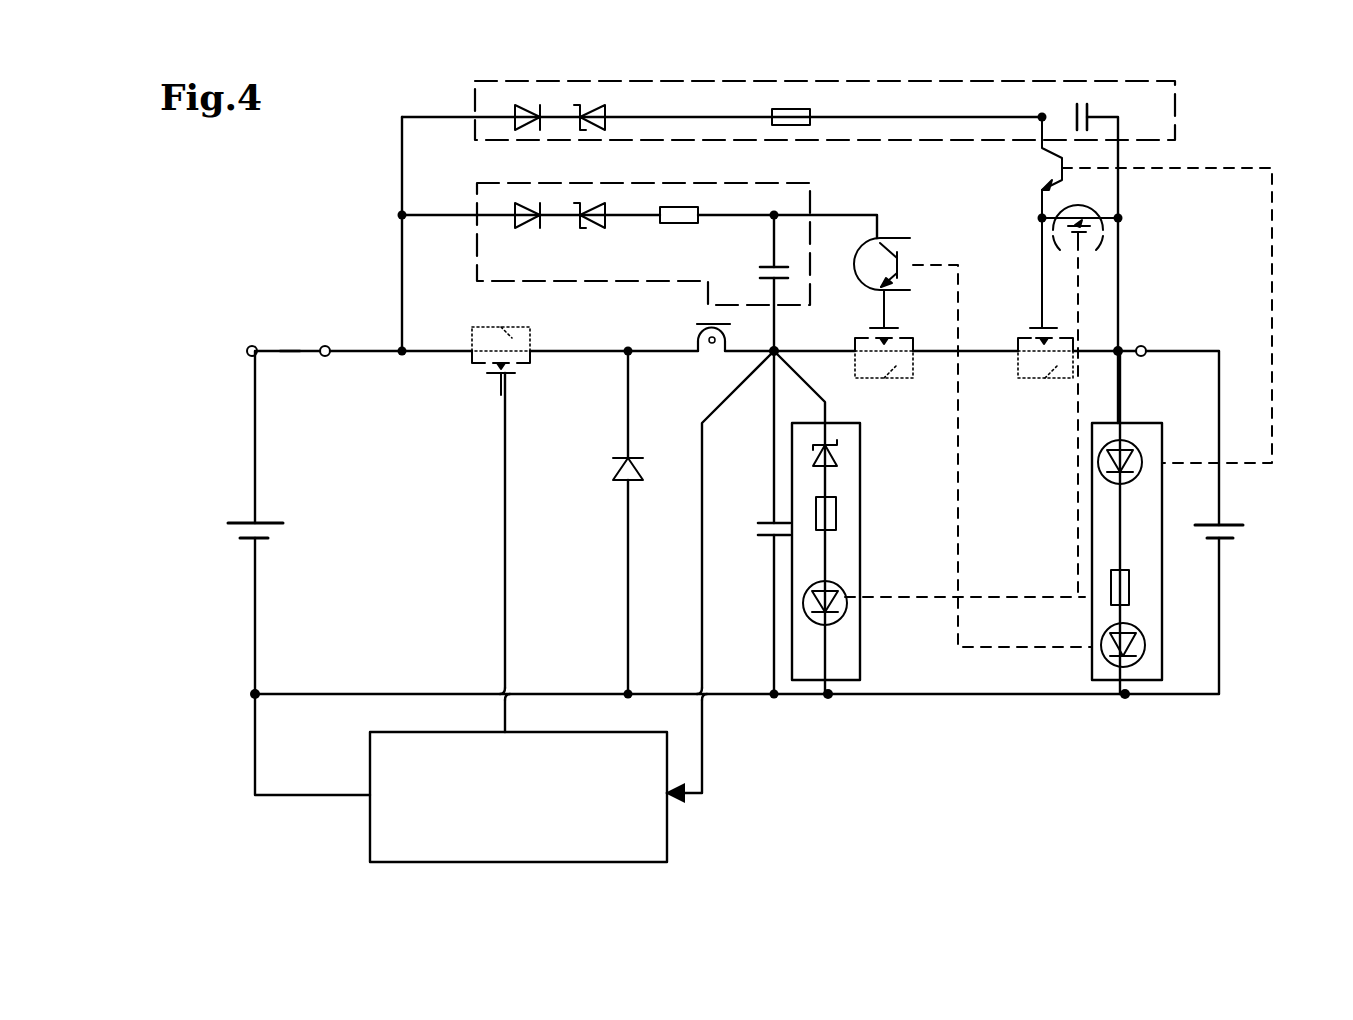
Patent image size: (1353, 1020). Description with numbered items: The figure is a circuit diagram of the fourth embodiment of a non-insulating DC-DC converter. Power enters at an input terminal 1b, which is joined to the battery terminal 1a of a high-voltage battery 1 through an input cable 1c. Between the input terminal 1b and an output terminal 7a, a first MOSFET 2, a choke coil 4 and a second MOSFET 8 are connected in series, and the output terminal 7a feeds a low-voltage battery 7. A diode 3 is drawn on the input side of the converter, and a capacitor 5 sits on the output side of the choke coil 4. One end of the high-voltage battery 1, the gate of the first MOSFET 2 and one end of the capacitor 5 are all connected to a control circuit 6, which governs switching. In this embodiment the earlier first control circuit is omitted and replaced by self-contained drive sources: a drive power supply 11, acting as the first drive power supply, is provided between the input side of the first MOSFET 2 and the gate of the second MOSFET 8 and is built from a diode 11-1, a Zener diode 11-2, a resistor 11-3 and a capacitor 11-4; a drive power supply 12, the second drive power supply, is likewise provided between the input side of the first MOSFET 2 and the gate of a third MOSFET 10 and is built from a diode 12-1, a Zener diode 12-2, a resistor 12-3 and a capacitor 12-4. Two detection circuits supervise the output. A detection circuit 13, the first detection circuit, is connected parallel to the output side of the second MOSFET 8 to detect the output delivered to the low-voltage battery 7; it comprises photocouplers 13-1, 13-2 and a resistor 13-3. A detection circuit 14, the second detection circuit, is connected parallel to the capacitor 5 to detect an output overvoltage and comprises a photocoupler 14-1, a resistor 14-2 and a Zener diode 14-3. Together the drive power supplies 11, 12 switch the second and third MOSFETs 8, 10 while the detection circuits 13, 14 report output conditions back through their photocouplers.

The high-voltage battery 1 is at (234, 518).
The battery terminal 1a is at (248, 346).
The input terminal 1b is at (330, 355).
The input cable 1c is at (288, 348).
The first MOSFET 2 is at (532, 365).
The diode 3 is at (612, 468).
The choke coil 4 is at (712, 356).
The capacitor 5 is at (758, 530).
The control circuit 6 is at (667, 830).
The low-voltage battery 7 is at (1230, 518).
The output terminal 7a is at (1146, 347).
The second MOSFET 8 is at (1045, 380).
The third MOSFET 10 is at (884, 380).
The drive power supply 11 is at (825, 79).
The diode 11-1 is at (530, 103).
The Zener diode 11-2 is at (598, 103).
The resistor 11-3 is at (792, 108).
The capacitor 11-4 is at (1082, 103).
The drive power supply 12 is at (729, 227).
The diode 12-1 is at (527, 203).
The Zener diode 12-2 is at (597, 203).
The resistor 12-3 is at (680, 206).
The capacitor 12-4 is at (757, 268).
The detection circuit 13 is at (1076, 614).
The photocoupler 13-1 is at (1100, 478).
The photocoupler 13-2 is at (1105, 638).
The resistor 13-3 is at (1110, 590).
The detection circuit 14 is at (914, 621).
The photocoupler 14-1 is at (835, 590).
The resistor 14-2 is at (836, 520).
The Zener diode 14-3 is at (838, 460).